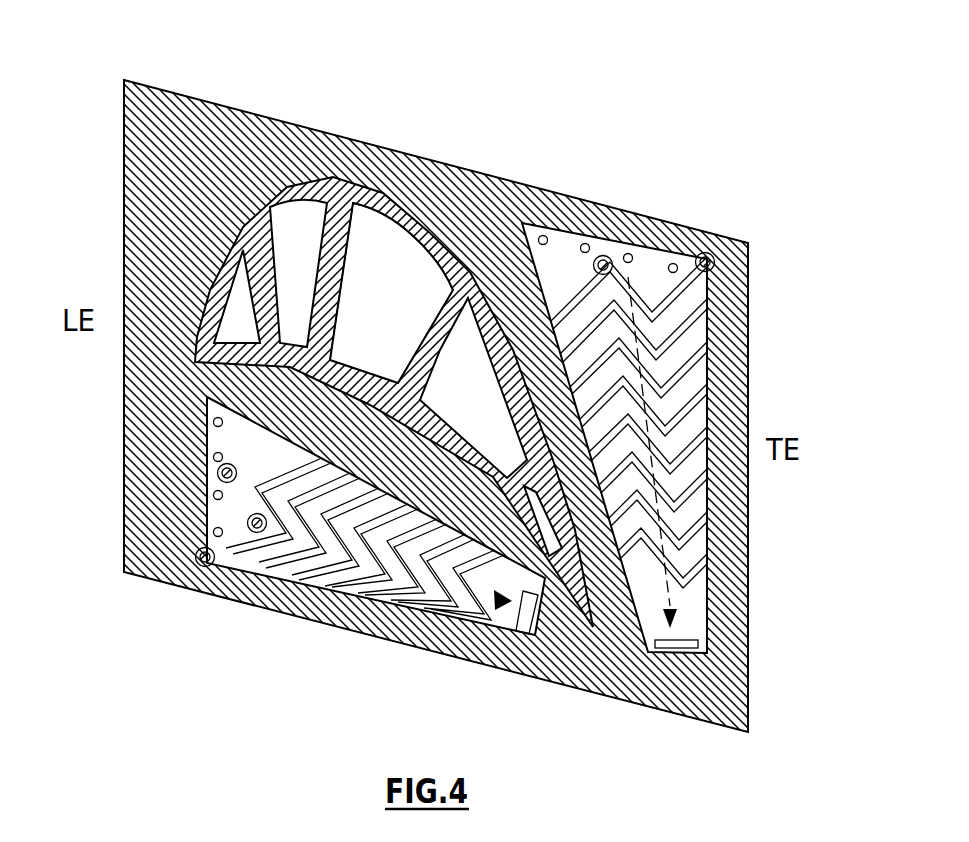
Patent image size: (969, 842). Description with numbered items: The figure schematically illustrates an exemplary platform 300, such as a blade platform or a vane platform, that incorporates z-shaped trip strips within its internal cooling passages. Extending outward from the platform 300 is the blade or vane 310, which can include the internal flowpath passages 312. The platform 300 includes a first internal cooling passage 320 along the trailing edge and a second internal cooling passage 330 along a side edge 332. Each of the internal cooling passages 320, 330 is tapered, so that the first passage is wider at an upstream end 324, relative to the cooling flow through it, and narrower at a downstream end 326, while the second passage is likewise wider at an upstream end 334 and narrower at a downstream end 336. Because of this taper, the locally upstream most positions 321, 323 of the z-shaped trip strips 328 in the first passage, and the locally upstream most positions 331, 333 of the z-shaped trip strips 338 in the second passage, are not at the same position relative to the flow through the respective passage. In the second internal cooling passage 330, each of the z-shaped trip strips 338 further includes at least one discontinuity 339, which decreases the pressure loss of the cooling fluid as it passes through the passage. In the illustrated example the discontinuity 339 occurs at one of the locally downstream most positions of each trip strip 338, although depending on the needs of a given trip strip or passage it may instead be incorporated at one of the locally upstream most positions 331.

The platform 300 is at (457, 84).
The blade or vane 310 is at (293, 180).
The internal flowpath passages 312 is at (377, 228).
The first internal cooling passage 320 is at (600, 224).
The locally upstream most position 321 is at (590, 262).
The locally upstream most position 323 is at (715, 263).
The upstream end 324 is at (655, 262).
The downstream end 326 is at (703, 658).
The z-shaped trip strips 328 is at (688, 334).
The second internal cooling passage 330 is at (330, 598).
The locally upstream most position 331 is at (218, 474).
The side edge 332 is at (417, 645).
The locally upstream most position 333 is at (200, 566).
The upstream end 334 is at (220, 516).
The downstream end 336 is at (538, 626).
The z-shaped trip strips 338 is at (206, 423).
The discontinuity 339 is at (257, 532).